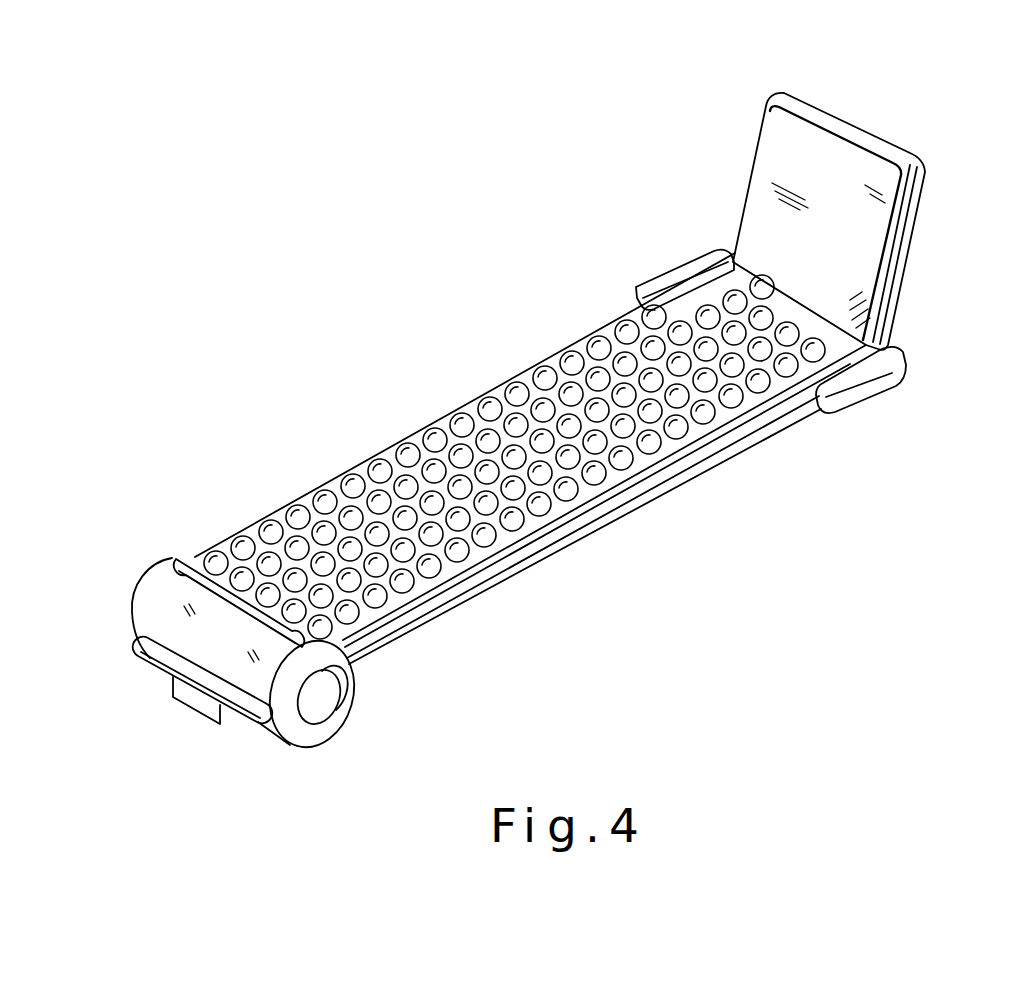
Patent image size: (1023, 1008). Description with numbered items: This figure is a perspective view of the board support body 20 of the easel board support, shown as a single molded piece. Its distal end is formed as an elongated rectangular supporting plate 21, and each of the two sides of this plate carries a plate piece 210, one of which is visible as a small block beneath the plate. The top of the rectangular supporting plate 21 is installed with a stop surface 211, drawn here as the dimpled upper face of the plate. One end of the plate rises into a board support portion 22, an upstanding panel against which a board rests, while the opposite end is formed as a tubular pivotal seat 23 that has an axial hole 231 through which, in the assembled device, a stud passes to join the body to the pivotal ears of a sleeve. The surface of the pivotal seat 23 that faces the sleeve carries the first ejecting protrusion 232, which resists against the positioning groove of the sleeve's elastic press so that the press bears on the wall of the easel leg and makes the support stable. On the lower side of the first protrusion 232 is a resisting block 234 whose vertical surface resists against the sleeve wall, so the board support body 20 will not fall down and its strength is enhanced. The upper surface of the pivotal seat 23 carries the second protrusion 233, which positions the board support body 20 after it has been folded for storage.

The board support body 20 is at (530, 457).
The rectangular supporting plate 21 is at (532, 560).
The stop surface 211 is at (470, 406).
The board support portion 22 is at (862, 132).
The tubular pivotal seat 23 is at (249, 638).
The axial hole 231 is at (320, 712).
The first ejecting protrusion 232 is at (147, 658).
The second protrusion 233 is at (188, 564).
The resisting block 234 is at (206, 714).
The plate piece 210 is at (898, 381).